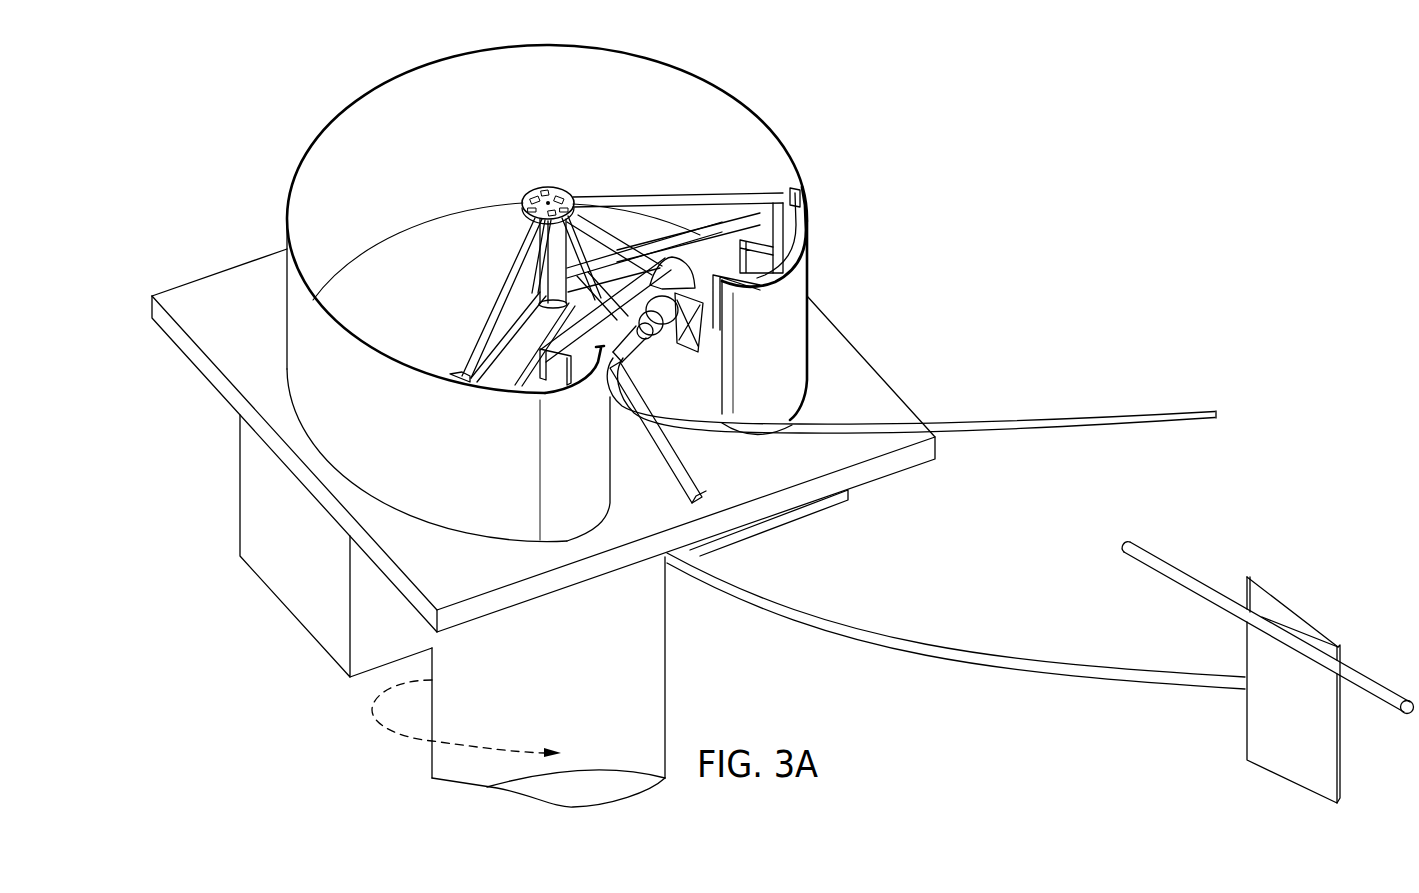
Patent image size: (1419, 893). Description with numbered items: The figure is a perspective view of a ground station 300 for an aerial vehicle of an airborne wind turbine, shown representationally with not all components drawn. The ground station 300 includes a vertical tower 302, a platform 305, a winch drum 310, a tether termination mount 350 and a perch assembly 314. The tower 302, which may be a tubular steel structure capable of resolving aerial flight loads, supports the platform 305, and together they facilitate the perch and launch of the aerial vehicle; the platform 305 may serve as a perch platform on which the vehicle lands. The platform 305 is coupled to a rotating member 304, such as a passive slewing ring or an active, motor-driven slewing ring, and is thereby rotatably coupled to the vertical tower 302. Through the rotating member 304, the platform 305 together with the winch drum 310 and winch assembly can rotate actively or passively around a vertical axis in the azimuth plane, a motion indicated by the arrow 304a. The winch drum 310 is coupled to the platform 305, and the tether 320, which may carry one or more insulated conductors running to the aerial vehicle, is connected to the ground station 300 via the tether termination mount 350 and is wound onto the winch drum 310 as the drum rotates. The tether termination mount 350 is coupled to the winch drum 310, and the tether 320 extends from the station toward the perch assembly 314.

The ground station 300 is at (776, 92).
The vertical tower 302 is at (655, 684).
The rotating member 304 is at (252, 496).
The arrow 304a is at (383, 727).
The platform 305 is at (226, 283).
The winch drum 310 is at (330, 129).
The perch assembly 314 is at (1072, 710).
The tether 320 is at (1093, 413).
The tether termination mount 350 is at (665, 351).